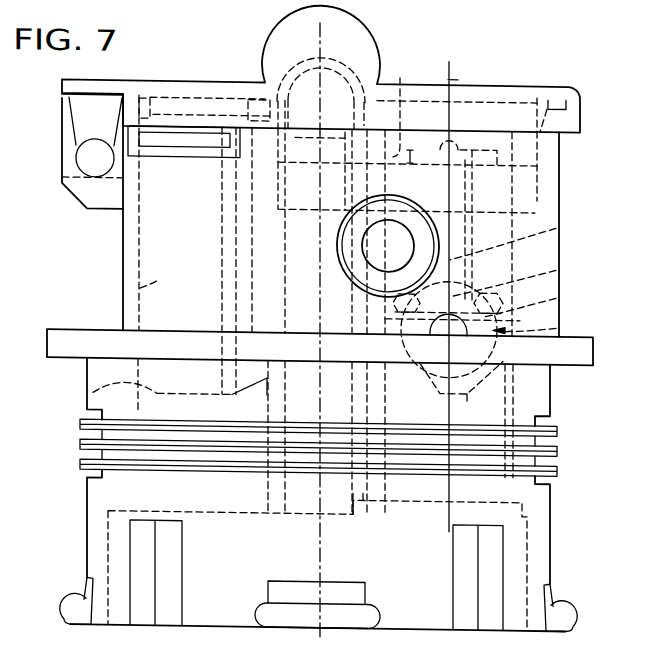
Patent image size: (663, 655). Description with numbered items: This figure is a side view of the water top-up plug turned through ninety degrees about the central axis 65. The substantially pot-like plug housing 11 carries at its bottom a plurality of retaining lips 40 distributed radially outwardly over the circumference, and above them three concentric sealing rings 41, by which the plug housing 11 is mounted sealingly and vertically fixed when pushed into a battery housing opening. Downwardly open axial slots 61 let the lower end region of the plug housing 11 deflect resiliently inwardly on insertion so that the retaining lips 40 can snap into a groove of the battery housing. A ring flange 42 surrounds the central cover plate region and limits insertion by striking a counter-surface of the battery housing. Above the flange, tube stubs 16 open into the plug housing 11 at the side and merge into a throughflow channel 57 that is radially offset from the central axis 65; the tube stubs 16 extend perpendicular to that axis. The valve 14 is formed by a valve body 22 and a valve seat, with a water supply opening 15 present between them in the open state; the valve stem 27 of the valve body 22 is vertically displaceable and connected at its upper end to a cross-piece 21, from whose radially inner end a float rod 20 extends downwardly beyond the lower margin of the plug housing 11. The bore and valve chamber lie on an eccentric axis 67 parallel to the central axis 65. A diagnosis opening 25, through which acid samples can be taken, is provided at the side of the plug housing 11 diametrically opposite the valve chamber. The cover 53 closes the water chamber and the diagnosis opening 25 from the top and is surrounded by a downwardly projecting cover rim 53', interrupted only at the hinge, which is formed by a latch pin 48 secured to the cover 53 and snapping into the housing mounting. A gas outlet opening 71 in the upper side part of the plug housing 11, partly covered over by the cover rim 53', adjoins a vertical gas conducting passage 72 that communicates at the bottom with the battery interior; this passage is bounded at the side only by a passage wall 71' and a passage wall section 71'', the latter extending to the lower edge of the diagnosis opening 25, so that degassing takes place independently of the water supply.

The plug housing 11 is at (73, 358).
The valve 14 is at (559, 318).
The water supply opening 15 is at (559, 256).
The tube stubs 16 is at (418, 218).
The float rod 20 is at (298, 178).
The cross-piece 21 is at (400, 72).
The valve body 22 is at (559, 288).
The diagnosis opening 25 is at (138, 250).
The valve stem 27 is at (559, 218).
The retaining lips 40 is at (75, 600).
The sealing rings 41 is at (557, 422).
The ring flange 42 is at (50, 344).
The latch pin 48 is at (90, 156).
The cover 53 is at (323, 67).
The cover rim 53' is at (457, 76).
The throughflow channel 57 is at (375, 252).
The axial slots 61 is at (167, 546).
The central axis 65 is at (332, 67).
The eccentric axis 67 is at (466, 63).
The gas outlet opening 71 is at (184, 161).
The passage wall 71' is at (208, 261).
The passage wall section 71'' is at (157, 401).
The gas conducting passage 72 is at (140, 286).